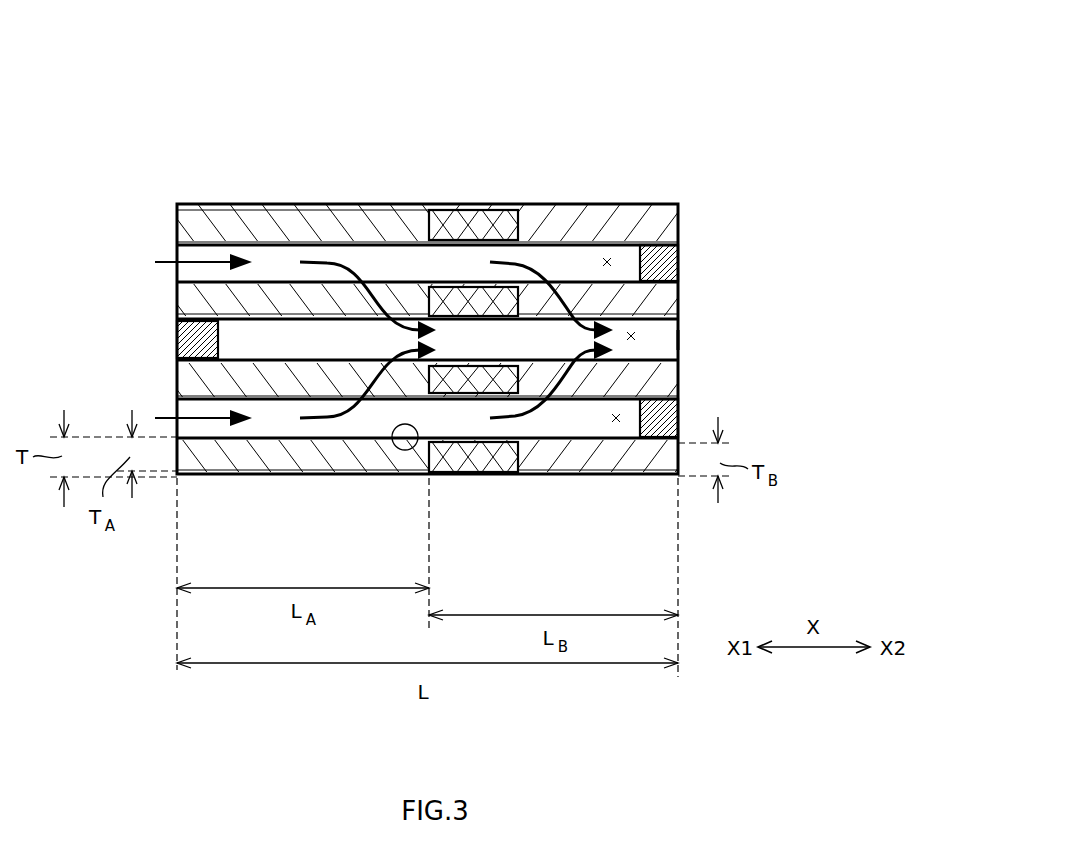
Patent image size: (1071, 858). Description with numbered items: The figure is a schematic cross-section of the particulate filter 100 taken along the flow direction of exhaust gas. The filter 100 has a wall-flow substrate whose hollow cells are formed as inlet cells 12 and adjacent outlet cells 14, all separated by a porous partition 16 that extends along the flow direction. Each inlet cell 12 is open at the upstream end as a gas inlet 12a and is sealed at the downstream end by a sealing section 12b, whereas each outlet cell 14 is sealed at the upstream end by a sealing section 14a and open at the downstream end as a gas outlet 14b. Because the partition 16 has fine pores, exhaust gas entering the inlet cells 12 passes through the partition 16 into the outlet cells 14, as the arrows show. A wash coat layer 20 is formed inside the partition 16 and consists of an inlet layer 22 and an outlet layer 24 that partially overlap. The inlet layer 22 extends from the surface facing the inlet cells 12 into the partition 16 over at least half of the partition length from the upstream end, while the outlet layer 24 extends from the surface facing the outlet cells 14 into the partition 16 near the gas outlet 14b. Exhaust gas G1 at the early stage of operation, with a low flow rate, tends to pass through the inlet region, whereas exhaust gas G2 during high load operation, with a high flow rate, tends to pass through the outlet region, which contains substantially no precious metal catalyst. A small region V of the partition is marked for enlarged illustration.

The particulate filter 100 is at (674, 190).
The inlet cell 12 is at (607, 260).
The gas inlet 12a is at (160, 272).
The sealing section 12b is at (674, 260).
The outlet cell 14 is at (642, 336).
The sealing section 14a is at (172, 338).
The gas outlet 14b is at (680, 343).
The partition 16 is at (203, 215).
The wash coat layer 20 is at (408, 115).
The inlet layer 22 is at (268, 288).
The outlet layer 24 is at (528, 212).
The exhaust gas at the early stage of operation G1 is at (345, 262).
The exhaust gas during a high load operation G2 is at (572, 297).
The region V is at (404, 451).